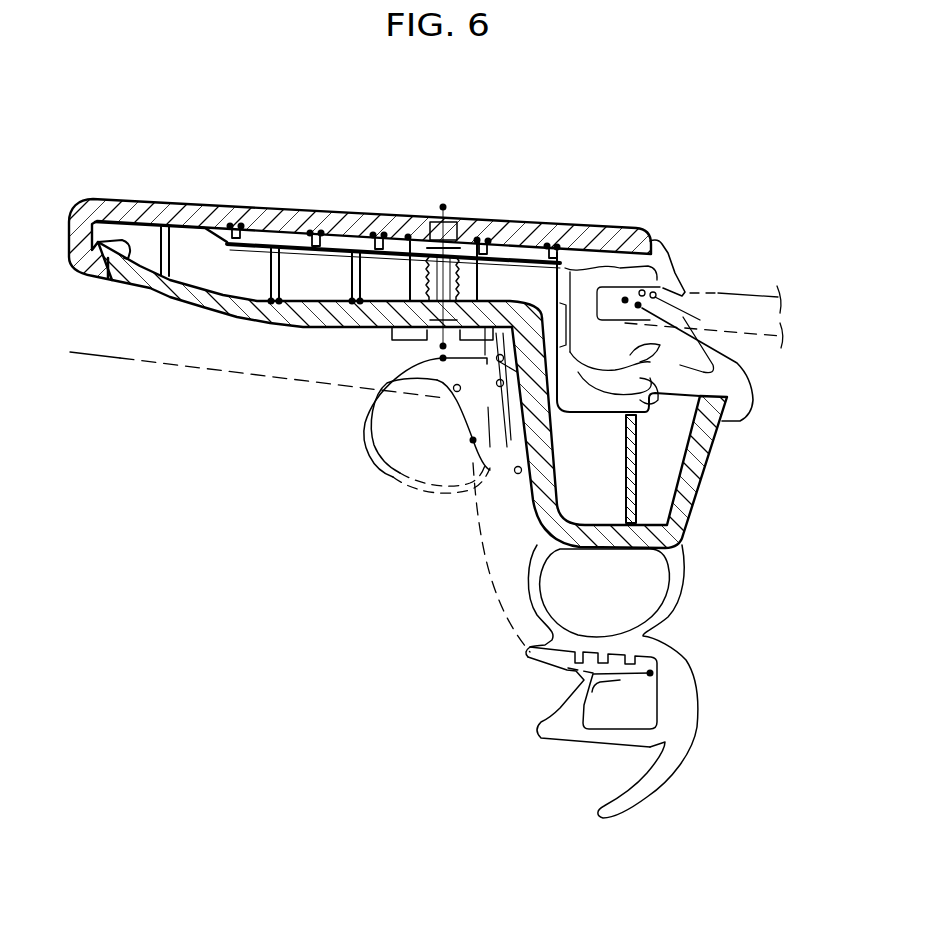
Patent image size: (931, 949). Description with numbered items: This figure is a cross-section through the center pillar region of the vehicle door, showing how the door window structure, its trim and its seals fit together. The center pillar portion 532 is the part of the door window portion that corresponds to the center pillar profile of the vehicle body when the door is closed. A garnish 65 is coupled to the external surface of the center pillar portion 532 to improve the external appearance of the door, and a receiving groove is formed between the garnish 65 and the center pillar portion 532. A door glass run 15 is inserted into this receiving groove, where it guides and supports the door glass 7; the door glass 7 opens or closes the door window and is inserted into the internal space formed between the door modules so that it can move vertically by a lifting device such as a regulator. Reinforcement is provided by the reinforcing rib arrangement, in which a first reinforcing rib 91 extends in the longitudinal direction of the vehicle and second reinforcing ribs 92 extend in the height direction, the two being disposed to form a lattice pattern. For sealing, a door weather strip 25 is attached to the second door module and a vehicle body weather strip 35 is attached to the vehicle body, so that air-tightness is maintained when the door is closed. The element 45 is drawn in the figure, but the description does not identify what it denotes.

The door glass 7 is at (732, 290).
The door glass run 15 is at (752, 390).
The door weather strip 25 is at (390, 478).
The vehicle body weather strip 35 is at (570, 745).
The pivot axis 45 is at (190, 368).
The garnish 65 is at (497, 223).
The first reinforcing rib 91 is at (320, 290).
The second reinforcing rib 92 is at (168, 253).
The center pillar portion 532 is at (695, 530).